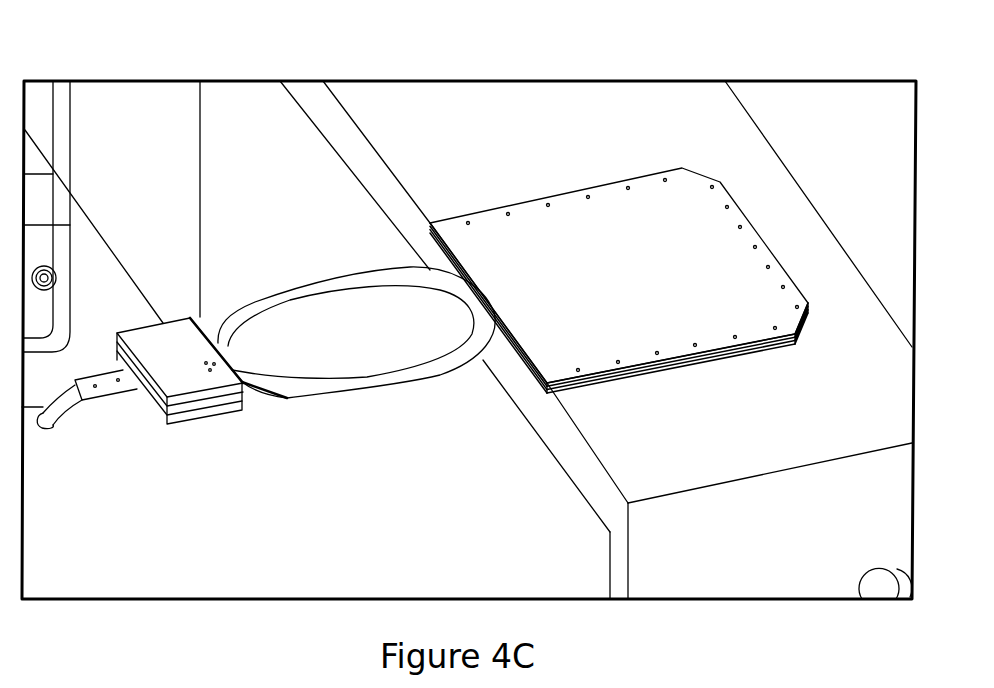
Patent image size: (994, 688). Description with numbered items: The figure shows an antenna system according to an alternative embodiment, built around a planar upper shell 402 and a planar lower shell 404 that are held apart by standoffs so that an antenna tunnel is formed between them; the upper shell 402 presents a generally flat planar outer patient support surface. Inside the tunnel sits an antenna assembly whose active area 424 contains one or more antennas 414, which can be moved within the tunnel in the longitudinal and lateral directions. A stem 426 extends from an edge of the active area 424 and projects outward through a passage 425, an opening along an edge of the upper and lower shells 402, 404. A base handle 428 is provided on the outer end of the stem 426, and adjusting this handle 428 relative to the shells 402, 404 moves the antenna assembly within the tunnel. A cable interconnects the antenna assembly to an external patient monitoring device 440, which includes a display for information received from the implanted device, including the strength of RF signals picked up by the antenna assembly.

The upper shell 402 is at (632, 348).
The lower shell 404 is at (580, 371).
The antenna 414 is at (327, 385).
The active area 424 is at (457, 365).
The passage 425 is at (432, 242).
The stem 426 is at (256, 395).
The base handle 428 is at (182, 388).
The external patient monitoring device 440 is at (80, 238).